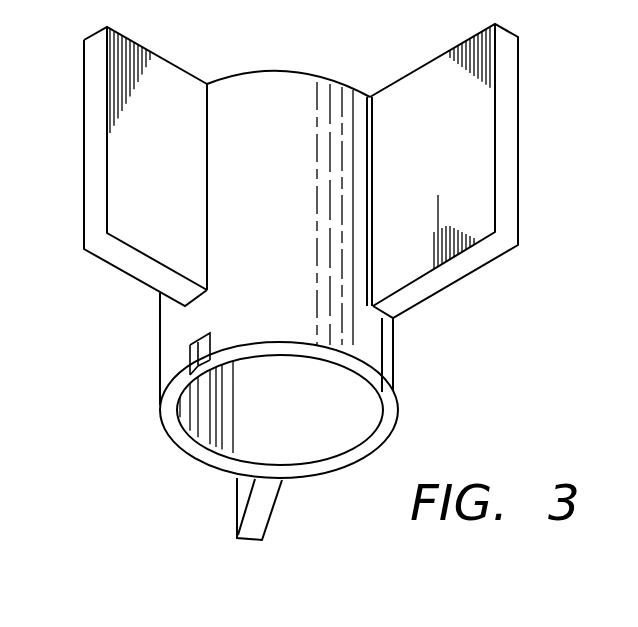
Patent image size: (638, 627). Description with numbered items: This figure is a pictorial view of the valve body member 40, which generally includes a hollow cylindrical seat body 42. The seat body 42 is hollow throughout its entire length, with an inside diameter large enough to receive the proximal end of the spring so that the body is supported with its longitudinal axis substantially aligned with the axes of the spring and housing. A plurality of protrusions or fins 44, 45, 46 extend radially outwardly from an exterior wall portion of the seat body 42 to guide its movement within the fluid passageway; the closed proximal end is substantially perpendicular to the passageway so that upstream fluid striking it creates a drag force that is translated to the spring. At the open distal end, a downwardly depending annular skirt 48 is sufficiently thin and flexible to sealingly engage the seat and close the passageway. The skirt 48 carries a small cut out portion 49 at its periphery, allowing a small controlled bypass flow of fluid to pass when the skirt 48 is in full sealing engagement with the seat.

The valve body member 40 is at (158, 327).
The seat body 42 is at (272, 83).
The fin 44 is at (97, 166).
The fin 45 is at (260, 518).
The fin 46 is at (512, 108).
The annular skirt 48 is at (397, 353).
The cut out portion 49 is at (190, 402).